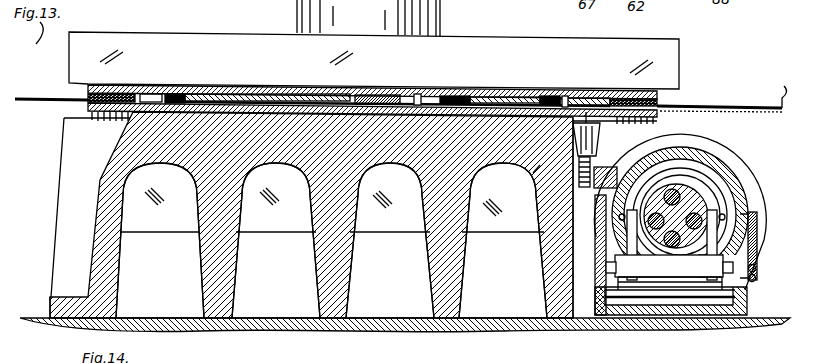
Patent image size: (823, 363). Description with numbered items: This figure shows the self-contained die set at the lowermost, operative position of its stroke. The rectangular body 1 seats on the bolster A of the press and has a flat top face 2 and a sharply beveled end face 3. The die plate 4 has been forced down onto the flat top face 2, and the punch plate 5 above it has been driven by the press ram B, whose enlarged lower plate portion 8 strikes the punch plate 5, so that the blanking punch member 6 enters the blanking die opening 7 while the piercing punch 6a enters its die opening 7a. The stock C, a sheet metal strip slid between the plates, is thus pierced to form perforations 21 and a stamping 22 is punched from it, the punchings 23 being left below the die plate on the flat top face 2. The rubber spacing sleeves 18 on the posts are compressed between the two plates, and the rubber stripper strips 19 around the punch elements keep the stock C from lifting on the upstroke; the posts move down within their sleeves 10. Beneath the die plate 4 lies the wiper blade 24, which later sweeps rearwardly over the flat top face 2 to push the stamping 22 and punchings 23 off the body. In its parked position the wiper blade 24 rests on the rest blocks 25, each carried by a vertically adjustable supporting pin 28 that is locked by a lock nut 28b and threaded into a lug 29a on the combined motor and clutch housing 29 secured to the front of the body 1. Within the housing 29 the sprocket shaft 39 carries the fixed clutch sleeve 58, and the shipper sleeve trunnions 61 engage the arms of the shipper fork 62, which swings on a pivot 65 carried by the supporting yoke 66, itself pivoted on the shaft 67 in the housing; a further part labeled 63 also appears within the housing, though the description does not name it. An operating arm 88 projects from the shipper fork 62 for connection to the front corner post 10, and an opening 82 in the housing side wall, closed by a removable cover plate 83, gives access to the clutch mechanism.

The body 1 is at (105, 228).
The flat top face 2 is at (275, 114).
The beveled end face 3 is at (112, 152).
The die plate 4 is at (156, 99).
The punch plate 5 is at (152, 90).
The blanking punch member 6 is at (248, 92).
The piercing punch 6a is at (543, 97).
The blanking die opening 7 is at (178, 114).
The die opening 7a is at (393, 95).
The lower plate portion 8 is at (678, 88).
The sleeve 10 is at (106, 119).
The rubber spacing sleeve 18 is at (82, 98).
The rubber stripper strip 19 is at (187, 90).
The perforations 21 is at (352, 100).
The stamping 22 is at (371, 115).
The punchings 23 is at (420, 114).
The wiper blade 24 is at (588, 122).
The rest block 25 is at (596, 137).
The supporting pin 28 is at (602, 183).
The lock nut 28b is at (595, 168).
The motor and clutch housing 29 is at (736, 184).
The lug 29a is at (533, 173).
The sprocket shaft 39 is at (698, 246).
The clutch sleeve 58 is at (698, 204).
The trunnions 61 is at (628, 222).
The shipper fork 62 is at (668, 277).
The roller 63 is at (646, 212).
The pivot 65 is at (755, 277).
The supporting yoke 66 is at (746, 301).
The pivot shaft 67 is at (652, 302).
The opening 82 is at (750, 236).
The cover plate 83 is at (755, 268).
The operating arm 88 is at (705, 282).
The bolster A is at (42, 318).
The ram B is at (445, 30).
The stock C is at (785, 92).